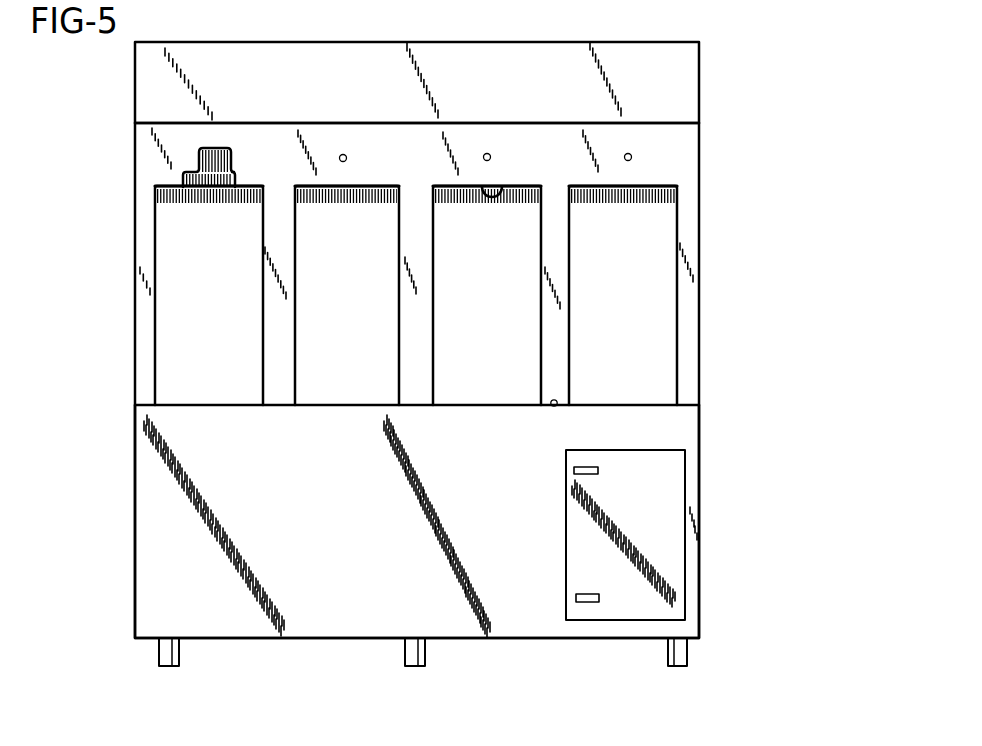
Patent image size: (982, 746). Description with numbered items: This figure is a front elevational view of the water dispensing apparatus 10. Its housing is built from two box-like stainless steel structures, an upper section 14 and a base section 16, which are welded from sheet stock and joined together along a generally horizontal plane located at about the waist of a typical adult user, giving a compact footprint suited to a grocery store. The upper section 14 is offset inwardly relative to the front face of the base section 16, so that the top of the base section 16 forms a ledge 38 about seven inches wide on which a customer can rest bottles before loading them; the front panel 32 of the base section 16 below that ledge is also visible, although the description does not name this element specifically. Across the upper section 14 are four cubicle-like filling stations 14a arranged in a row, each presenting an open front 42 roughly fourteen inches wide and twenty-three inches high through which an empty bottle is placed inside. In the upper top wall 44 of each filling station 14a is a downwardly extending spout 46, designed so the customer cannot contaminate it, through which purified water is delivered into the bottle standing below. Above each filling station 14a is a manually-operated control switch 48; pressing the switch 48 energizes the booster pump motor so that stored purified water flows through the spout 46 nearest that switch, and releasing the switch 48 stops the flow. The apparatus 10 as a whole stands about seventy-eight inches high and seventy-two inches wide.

The water dispensing apparatus 10 is at (705, 197).
The upper section 14 is at (703, 300).
The filling stations 14a is at (370, 225).
The base section 16 is at (165, 493).
The base cabinet front panel 32 is at (313, 585).
The ledge 38 is at (555, 406).
The open front 42 is at (635, 328).
The upper top wall 44 is at (507, 185).
The spout 46 is at (208, 181).
The control switch 48 is at (486, 153).